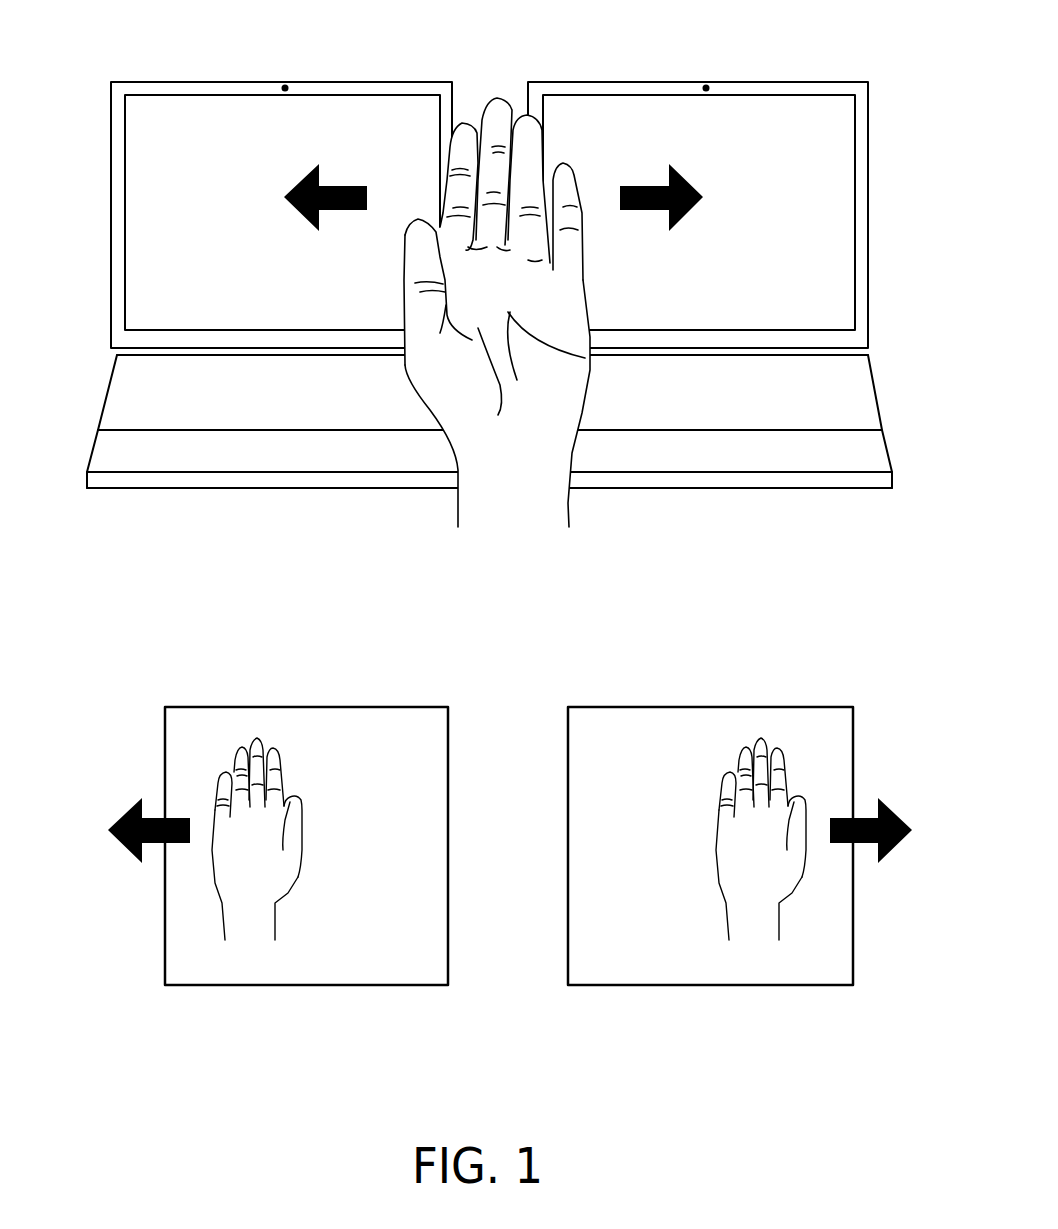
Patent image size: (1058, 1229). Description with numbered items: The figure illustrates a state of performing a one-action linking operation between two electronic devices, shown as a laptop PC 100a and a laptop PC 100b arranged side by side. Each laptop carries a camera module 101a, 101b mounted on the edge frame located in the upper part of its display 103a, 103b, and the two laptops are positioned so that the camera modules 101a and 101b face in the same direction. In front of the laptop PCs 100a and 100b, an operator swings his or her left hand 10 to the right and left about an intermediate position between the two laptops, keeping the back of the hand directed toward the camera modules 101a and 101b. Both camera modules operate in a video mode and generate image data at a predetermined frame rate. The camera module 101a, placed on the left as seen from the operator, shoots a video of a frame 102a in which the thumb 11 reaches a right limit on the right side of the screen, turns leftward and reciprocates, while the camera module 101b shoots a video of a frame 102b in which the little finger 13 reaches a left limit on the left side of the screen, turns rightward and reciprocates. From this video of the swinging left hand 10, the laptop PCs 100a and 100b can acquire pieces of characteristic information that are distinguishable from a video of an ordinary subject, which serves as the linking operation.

The left hand 10 is at (499, 66).
The thumb 11 is at (413, 218).
The little finger 13 is at (565, 162).
The laptop PC 100a is at (272, 244).
The laptop PC 100b is at (710, 244).
The camera module 101a is at (285, 85).
The camera module 101b is at (706, 85).
The frame 102a is at (363, 705).
The frame 102b is at (740, 705).
The display 103a is at (305, 149).
The display 103b is at (740, 149).